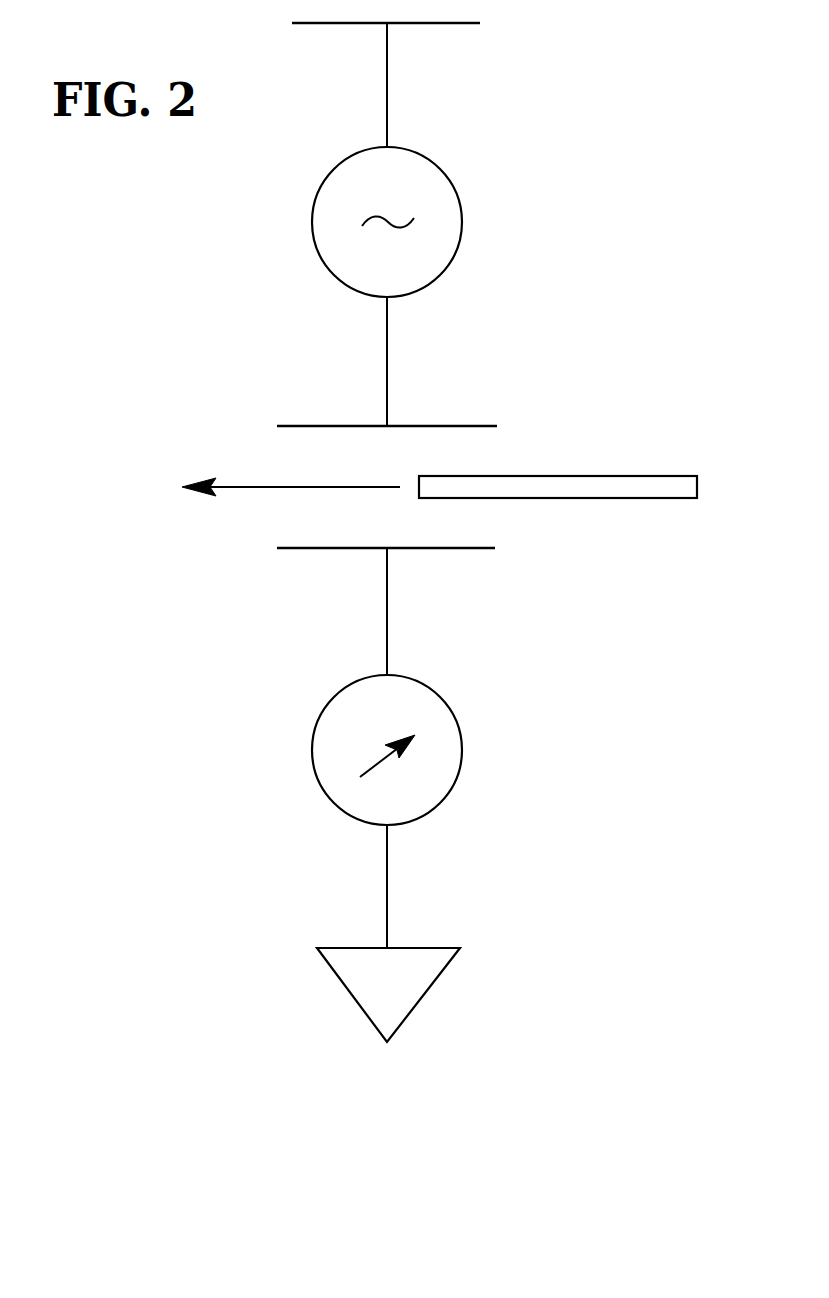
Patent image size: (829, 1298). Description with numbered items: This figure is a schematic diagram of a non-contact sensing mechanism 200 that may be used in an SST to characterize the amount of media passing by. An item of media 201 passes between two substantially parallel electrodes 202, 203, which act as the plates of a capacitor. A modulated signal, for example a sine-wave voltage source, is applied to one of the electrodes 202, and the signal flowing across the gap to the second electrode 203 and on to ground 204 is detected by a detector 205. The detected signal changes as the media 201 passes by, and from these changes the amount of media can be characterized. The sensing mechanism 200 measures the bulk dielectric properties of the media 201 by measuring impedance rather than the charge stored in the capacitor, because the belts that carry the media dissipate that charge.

The sensing mechanism 200 is at (597, 1135).
The item of media 201 is at (690, 476).
The electrode 202 is at (480, 425).
The second electrode 203 is at (478, 549).
The ground 204 is at (428, 990).
The detector 205 is at (462, 731).